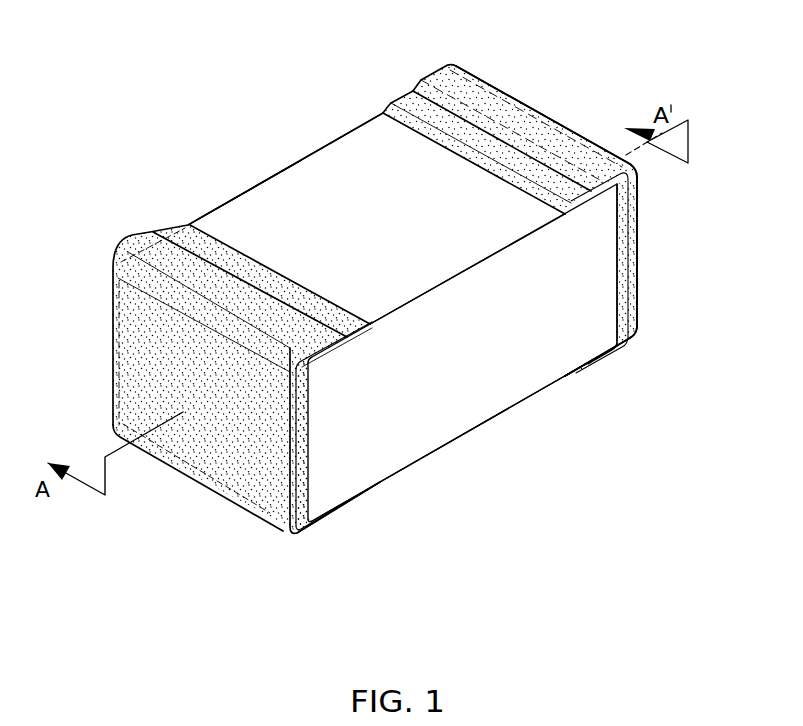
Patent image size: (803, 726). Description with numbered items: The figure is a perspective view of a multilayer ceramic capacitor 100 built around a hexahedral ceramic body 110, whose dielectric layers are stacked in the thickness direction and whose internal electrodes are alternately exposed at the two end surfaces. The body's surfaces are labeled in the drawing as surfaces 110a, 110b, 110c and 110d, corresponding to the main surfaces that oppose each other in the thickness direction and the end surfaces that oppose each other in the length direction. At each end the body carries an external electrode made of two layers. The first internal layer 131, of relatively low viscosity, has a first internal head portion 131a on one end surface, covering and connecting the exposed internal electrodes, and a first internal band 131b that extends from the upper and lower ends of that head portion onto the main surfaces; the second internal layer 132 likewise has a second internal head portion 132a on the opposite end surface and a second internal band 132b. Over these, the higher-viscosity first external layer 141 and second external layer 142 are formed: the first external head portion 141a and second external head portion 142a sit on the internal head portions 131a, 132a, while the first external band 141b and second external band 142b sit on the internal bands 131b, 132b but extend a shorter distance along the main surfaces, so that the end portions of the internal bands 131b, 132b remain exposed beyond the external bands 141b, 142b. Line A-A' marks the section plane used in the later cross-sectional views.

The multilayer ceramic capacitor 100 is at (90, 51).
The ceramic body 110 is at (306, 169).
The first surface of body 110a is at (347, 153).
The second surface of body 110b is at (433, 433).
The third surface of body 110c is at (242, 197).
The fourth surface of body 110d is at (510, 413).
The first internal layer 131 is at (452, 522).
The first internal head portion 131a is at (300, 467).
The first internal band 131b is at (345, 503).
The second internal layer 132 is at (729, 337).
The second internal head portion 132a is at (624, 305).
The second internal band 132b is at (577, 377).
The first external layer 141 is at (147, 156).
The first external head portion 141a is at (106, 303).
The first external band 141b is at (147, 233).
The second external layer 142 is at (729, 200).
The second external head portion 142a is at (636, 266).
The second external band 142b is at (612, 187).